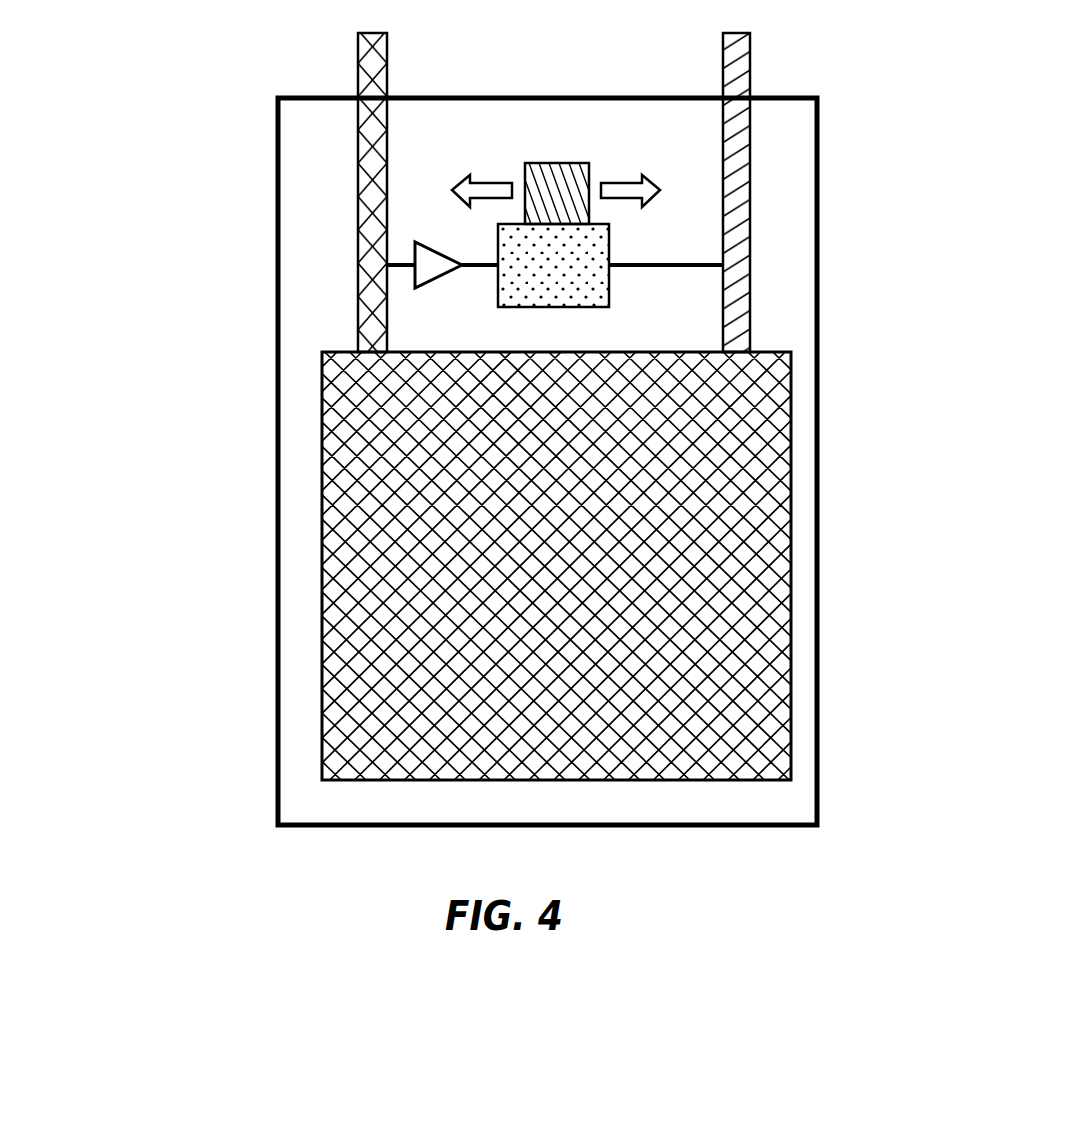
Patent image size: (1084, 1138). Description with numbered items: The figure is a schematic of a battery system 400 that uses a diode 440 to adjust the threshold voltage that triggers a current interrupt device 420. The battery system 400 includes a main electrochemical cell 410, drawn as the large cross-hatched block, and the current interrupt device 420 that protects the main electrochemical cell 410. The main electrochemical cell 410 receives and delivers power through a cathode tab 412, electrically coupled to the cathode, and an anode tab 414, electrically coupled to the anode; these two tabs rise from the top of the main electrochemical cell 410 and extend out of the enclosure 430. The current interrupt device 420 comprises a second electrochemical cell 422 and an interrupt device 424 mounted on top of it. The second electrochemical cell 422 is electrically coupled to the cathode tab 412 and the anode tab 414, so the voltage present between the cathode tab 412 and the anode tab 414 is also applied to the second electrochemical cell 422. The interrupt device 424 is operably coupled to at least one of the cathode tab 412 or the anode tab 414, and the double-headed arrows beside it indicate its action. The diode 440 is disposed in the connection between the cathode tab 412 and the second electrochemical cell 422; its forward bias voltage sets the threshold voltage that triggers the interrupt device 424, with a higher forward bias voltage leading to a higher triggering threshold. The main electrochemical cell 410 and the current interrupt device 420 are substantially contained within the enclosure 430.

The battery system 400 is at (132, 219).
The main electrochemical cell 410 is at (416, 700).
The cathode tab 412 is at (358, 70).
The anode tab 414 is at (750, 70).
The current interrupt device 420 is at (640, 158).
The second electrochemical cell 422 is at (610, 288).
The interrupt device 424 is at (546, 163).
The enclosure 430 is at (278, 612).
The diode 440 is at (430, 243).